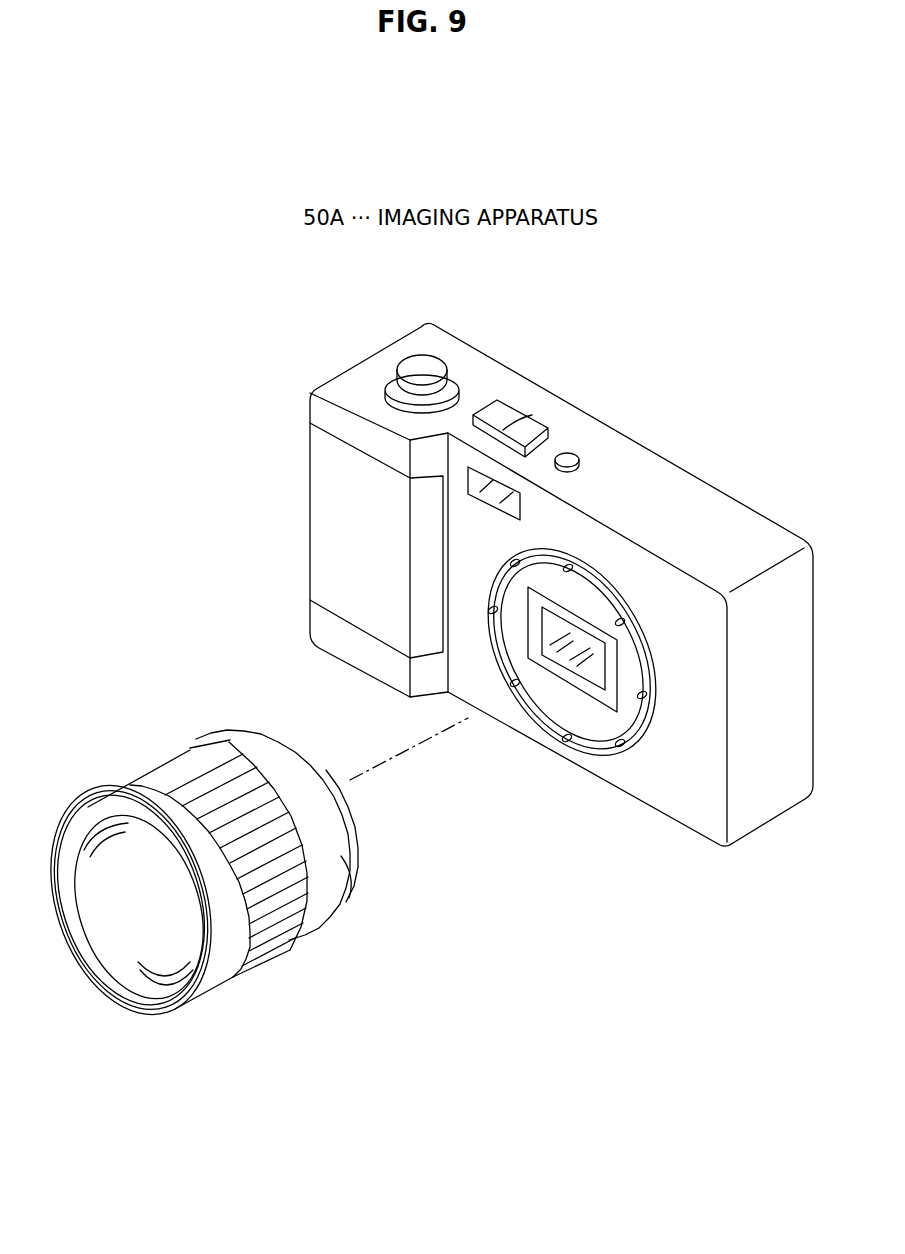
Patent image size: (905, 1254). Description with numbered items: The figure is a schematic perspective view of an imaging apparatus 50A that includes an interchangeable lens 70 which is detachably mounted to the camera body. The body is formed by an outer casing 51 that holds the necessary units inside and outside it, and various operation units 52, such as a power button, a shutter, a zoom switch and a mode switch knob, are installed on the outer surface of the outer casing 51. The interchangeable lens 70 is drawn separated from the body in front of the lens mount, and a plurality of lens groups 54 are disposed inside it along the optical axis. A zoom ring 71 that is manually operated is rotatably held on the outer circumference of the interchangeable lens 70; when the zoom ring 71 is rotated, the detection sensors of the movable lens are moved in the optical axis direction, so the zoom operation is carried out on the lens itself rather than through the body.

The imaging apparatus 50A is at (753, 326).
The outer casing 51 is at (695, 498).
The operation units 52 is at (430, 362).
The lens groups 54 is at (108, 921).
The interchangeable lens 70 is at (113, 795).
The zoom ring 71 is at (153, 763).